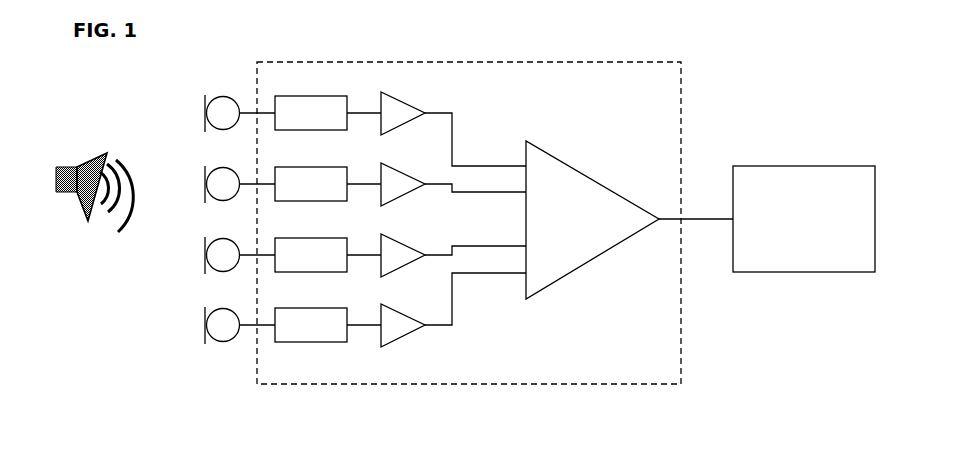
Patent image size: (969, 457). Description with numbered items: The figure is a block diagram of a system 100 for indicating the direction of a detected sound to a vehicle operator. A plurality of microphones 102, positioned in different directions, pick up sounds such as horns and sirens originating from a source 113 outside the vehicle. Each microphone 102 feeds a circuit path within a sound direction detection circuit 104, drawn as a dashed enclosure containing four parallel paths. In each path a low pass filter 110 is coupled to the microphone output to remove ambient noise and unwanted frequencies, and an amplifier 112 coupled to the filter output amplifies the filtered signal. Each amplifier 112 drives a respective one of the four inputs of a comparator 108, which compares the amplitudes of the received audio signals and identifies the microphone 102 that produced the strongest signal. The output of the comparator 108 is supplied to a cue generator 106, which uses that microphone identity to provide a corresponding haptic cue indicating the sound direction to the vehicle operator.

The system 100 is at (708, 56).
The microphones 102 is at (205, 120).
The sound direction detection circuit 104 is at (653, 385).
The cue generator 106 is at (845, 272).
The comparator 108 is at (598, 255).
The low pass filter 110 is at (311, 130).
The amplifier 112 is at (402, 125).
The sound source 113 is at (76, 231).